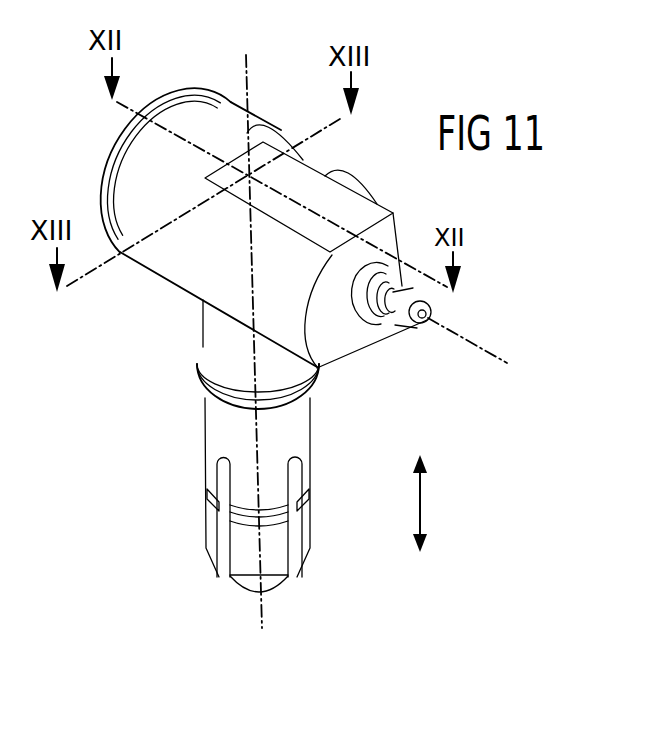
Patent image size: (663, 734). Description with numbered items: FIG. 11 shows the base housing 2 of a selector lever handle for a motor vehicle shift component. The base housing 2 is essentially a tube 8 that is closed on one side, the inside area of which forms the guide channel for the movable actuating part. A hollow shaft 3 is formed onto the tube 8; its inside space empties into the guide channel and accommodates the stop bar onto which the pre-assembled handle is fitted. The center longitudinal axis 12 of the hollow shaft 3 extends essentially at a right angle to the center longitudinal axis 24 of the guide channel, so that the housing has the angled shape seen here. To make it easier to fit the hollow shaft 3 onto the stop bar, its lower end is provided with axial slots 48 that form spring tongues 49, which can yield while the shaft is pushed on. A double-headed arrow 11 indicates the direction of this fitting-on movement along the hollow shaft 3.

The base housing 2 is at (70, 165).
The tube 8 is at (168, 262).
The hollow shaft 3 is at (258, 478).
The center longitudinal axis of the guide channel 24 is at (467, 349).
The axial slots 48 is at (225, 548).
The spring tongues 49 is at (225, 528).
The direction of displacement 11 is at (423, 502).
The center longitudinal axis of the hollow shaft 12 is at (262, 626).